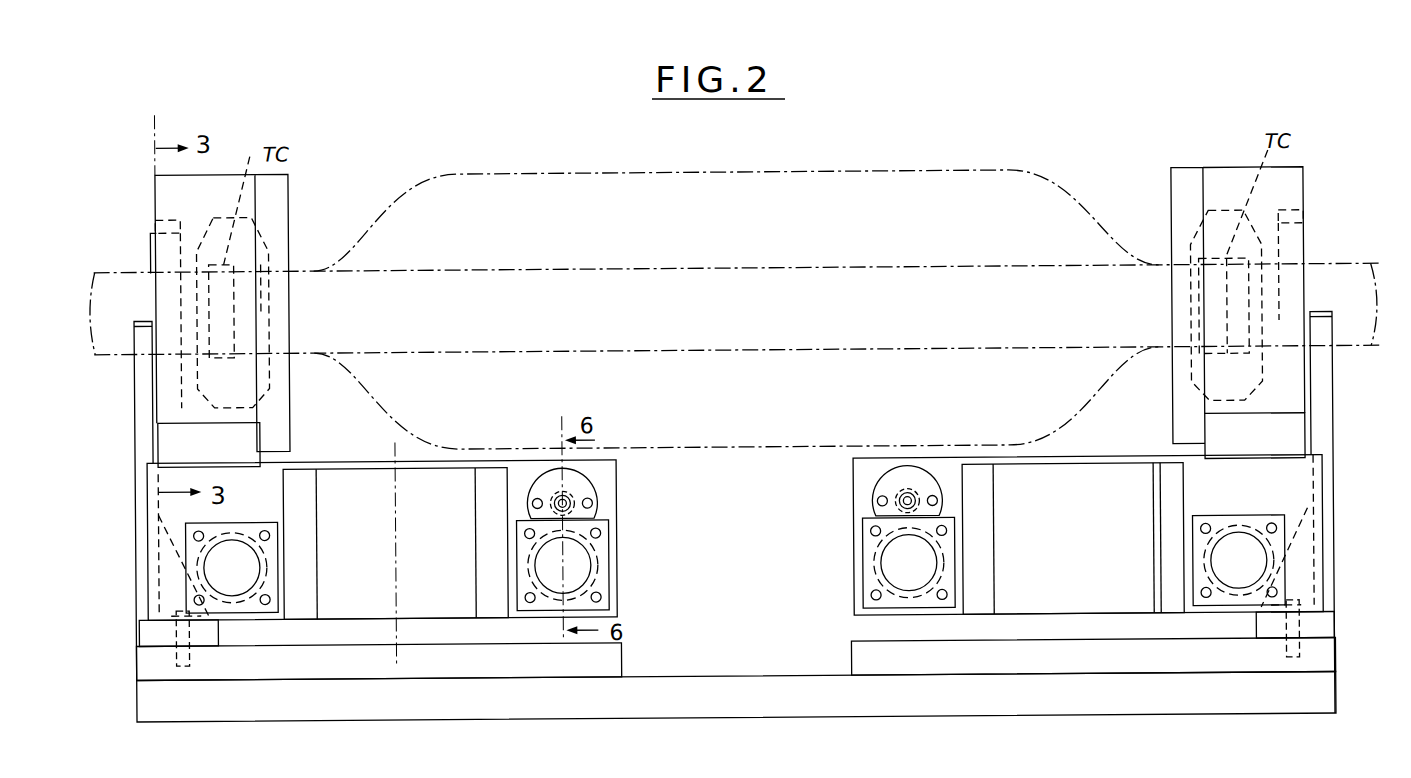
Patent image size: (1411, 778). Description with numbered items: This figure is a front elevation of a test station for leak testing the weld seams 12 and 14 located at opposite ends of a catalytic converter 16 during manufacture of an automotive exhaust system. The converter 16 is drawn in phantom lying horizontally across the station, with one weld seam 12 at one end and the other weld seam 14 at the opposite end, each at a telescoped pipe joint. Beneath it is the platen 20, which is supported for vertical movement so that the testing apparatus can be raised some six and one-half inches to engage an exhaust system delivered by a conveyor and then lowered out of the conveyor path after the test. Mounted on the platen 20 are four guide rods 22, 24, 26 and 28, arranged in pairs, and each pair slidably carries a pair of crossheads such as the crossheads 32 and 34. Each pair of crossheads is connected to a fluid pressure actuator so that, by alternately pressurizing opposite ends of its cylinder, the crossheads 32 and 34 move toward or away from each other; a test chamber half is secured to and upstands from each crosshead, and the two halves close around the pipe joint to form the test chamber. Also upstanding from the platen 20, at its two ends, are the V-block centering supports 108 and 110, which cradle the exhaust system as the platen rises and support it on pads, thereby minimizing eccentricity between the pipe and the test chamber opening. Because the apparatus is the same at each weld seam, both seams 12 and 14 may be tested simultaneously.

The weld seam 12 is at (1228, 311).
The weld seam 14 is at (235, 336).
The catalytic converter 16 is at (752, 324).
The platen 20 is at (753, 705).
The guide rod 22 is at (246, 578).
The guide rod 24 is at (577, 578).
The guide rod 26 is at (923, 578).
The guide rod 28 is at (1253, 578).
The crosshead 32 is at (618, 490).
The crosshead 34 is at (853, 493).
The V-block centering support 108 is at (133, 405).
The V-block centering support 110 is at (1327, 430).